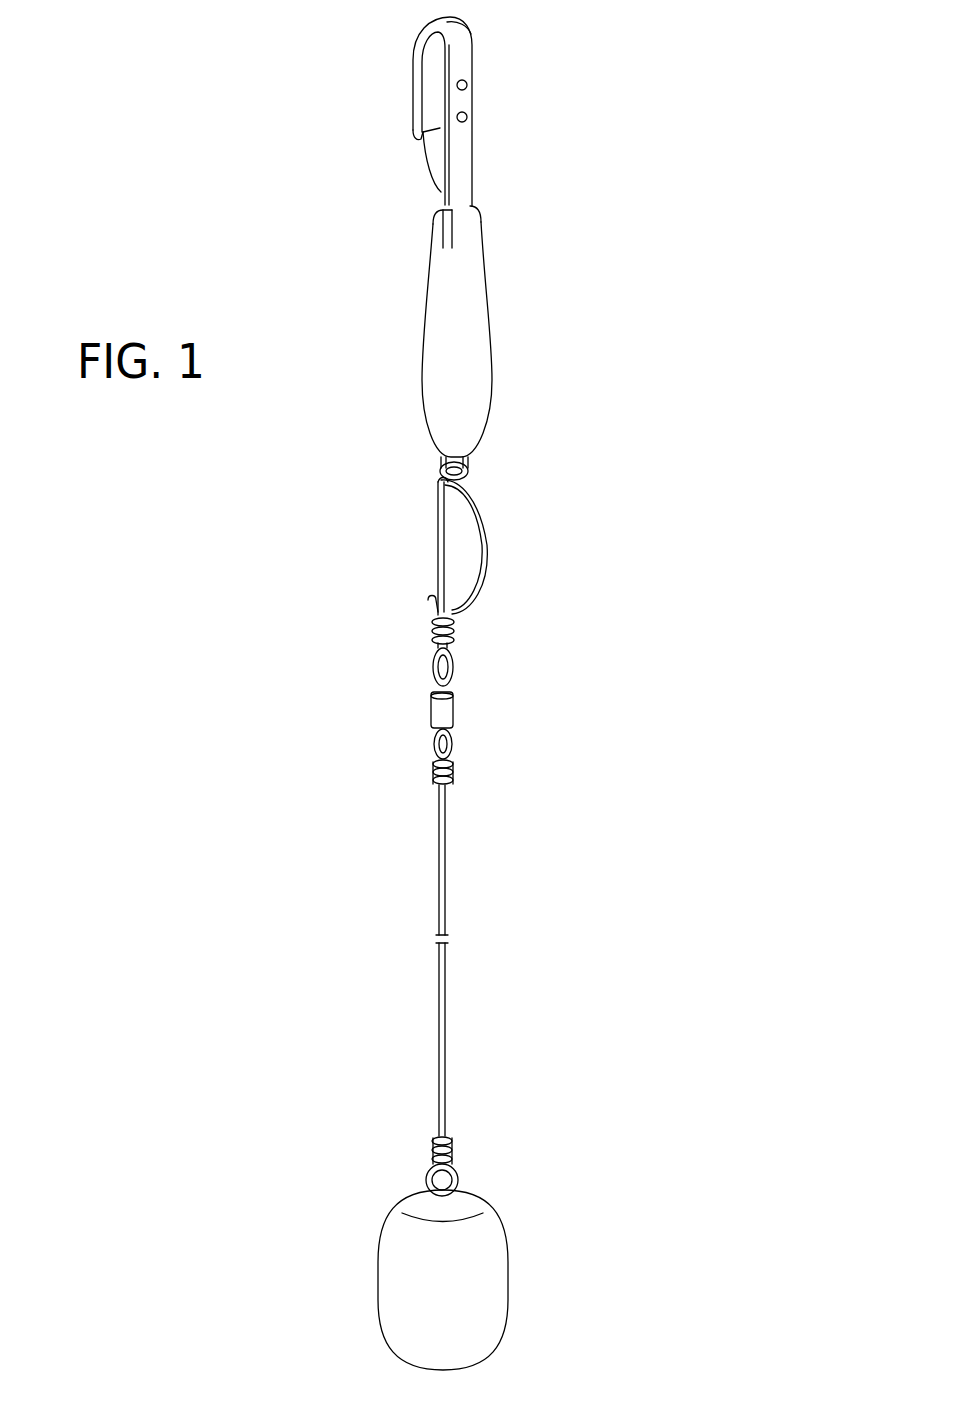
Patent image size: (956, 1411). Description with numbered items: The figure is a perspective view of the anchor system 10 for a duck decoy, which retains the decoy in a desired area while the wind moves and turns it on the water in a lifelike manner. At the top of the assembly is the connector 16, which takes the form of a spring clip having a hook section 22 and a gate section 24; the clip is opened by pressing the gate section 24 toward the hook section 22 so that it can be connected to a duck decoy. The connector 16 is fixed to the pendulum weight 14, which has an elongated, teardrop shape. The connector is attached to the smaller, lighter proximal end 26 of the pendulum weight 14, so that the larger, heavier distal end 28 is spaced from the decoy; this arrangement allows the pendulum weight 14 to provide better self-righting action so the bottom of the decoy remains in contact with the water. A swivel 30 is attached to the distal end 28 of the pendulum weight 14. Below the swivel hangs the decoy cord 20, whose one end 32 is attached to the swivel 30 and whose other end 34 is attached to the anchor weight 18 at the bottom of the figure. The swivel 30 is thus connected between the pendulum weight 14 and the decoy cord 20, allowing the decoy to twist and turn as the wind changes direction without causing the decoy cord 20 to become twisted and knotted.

The anchor system 10 is at (683, 222).
The pendulum weight 14 is at (480, 360).
The connector 16 is at (470, 57).
The anchor weight 18 is at (490, 1287).
The decoy cord 20 is at (438, 898).
The hook section 22 is at (413, 92).
The gate section 24 is at (432, 160).
The proximal end 26 is at (474, 210).
The distal end 28 is at (474, 460).
The swivel 30 is at (434, 597).
The one end of decoy cord 32 is at (466, 682).
The another end of decoy cord 34 is at (452, 1147).